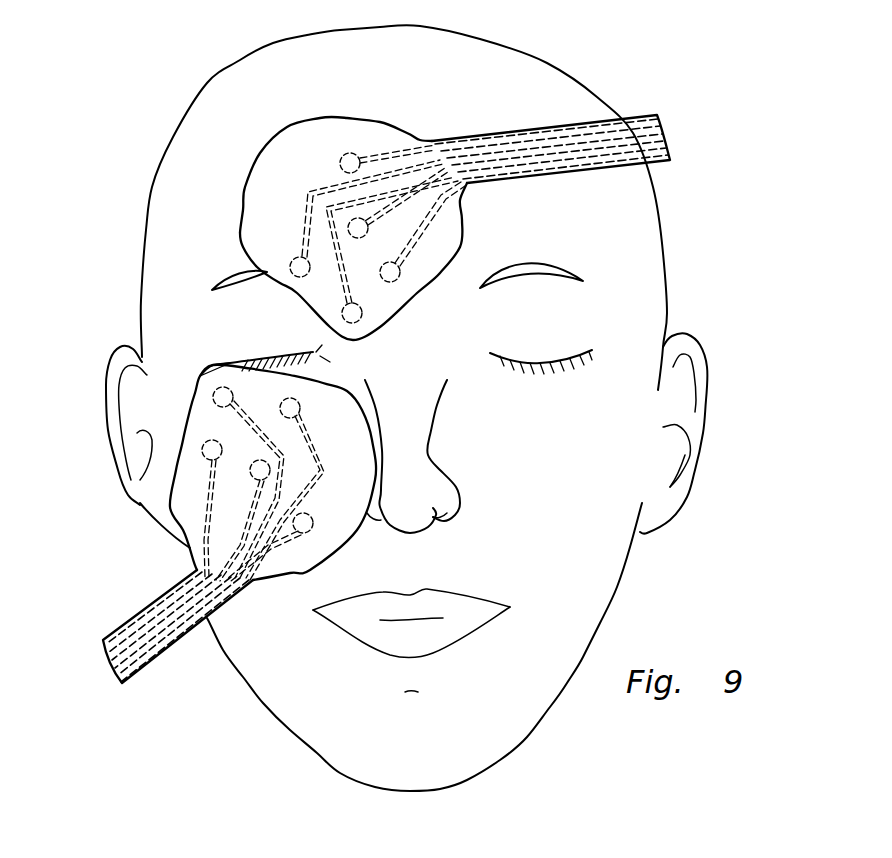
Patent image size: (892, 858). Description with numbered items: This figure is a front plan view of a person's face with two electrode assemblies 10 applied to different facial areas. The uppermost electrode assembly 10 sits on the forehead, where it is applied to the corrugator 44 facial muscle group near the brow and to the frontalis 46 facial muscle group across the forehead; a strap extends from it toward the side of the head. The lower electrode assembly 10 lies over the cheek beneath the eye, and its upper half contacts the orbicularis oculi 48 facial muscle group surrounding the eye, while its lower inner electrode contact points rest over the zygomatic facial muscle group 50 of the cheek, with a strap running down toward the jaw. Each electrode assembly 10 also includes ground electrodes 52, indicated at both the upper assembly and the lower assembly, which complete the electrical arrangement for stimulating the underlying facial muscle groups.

The electrode assembly 10 is at (648, 100).
The corrugator facial muscle group 44 is at (310, 296).
The frontalis facial muscle group 46 is at (333, 175).
The orbicularis oculi facial muscle group 48 is at (207, 403).
The zygomatic facial muscle group 50 is at (195, 552).
The ground electrode 52 is at (207, 446).